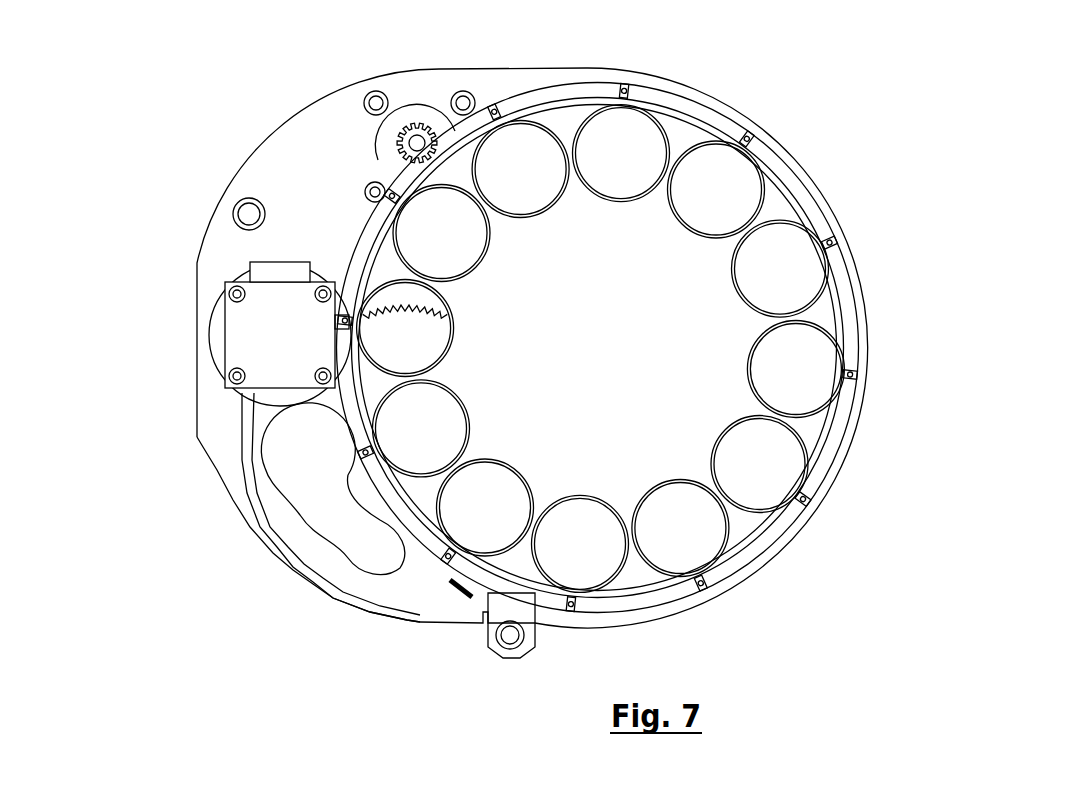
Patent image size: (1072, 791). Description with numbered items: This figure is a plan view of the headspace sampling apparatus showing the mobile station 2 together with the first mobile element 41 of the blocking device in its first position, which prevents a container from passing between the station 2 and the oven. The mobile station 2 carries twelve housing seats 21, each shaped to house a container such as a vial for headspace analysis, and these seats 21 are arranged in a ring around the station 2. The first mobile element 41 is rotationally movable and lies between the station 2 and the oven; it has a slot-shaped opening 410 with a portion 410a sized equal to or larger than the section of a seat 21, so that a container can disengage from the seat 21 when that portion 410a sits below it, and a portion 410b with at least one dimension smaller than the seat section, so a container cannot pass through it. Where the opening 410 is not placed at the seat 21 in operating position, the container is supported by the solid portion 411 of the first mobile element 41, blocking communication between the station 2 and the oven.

The mobile station 2 is at (680, 362).
The housing seat 21 is at (783, 255).
The first mobile element 41 is at (252, 412).
The opening 410 is at (235, 536).
The portion of the opening 410a is at (282, 462).
The portion of the opening 410b is at (352, 540).
The solid portion 411 is at (475, 510).